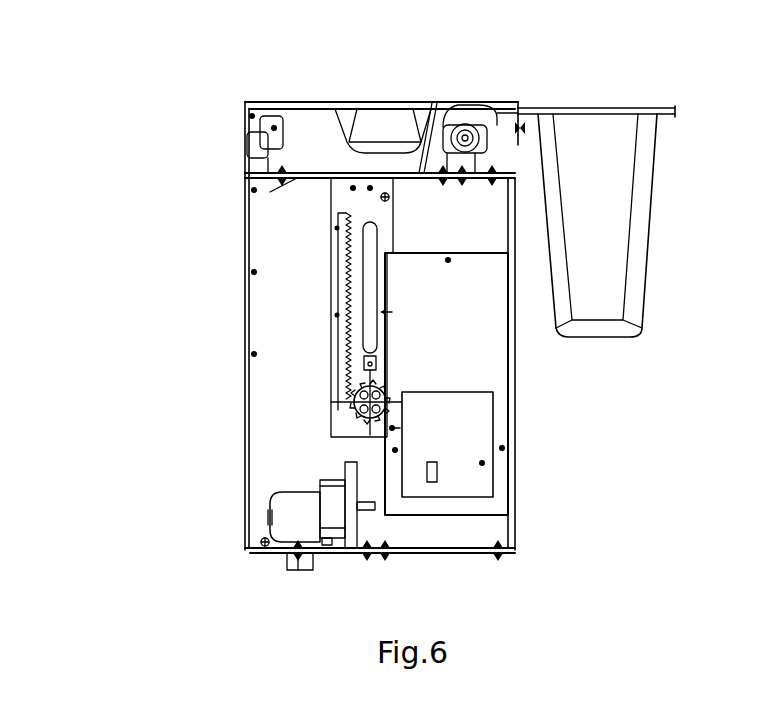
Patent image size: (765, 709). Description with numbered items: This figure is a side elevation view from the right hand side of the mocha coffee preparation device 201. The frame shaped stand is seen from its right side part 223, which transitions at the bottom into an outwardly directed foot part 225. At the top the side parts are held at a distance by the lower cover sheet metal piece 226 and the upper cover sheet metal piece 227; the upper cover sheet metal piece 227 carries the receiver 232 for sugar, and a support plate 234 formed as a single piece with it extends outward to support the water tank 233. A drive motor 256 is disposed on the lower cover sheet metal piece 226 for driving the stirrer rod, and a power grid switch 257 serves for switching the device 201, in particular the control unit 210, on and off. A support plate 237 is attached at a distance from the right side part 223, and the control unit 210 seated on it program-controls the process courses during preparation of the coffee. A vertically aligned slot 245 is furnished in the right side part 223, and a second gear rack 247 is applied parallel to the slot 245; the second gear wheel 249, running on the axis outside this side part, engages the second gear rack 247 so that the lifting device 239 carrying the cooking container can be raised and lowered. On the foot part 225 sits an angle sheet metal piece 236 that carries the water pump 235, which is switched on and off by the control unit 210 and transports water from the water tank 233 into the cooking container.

The device 201 is at (192, 108).
The upper cover sheet metal piece 227 is at (290, 101).
The receiver for sugar 232 is at (391, 118).
The drive motor 256 is at (488, 112).
The support plate 234 is at (568, 111).
The water tank 233 is at (616, 174).
The power grid switch 257 is at (243, 136).
The lower cover sheet metal piece 226 is at (290, 181).
The slot 245 is at (368, 238).
The second gear rack 247 is at (337, 270).
The lifting device 239 is at (296, 337).
The right side part 223 is at (270, 385).
The second gear wheel 249 is at (345, 413).
The support plate 237 is at (492, 360).
The control unit 210 is at (483, 478).
The water pump 235 is at (320, 489).
The foot part 225 is at (330, 556).
The angle sheet metal piece 236 is at (360, 530).